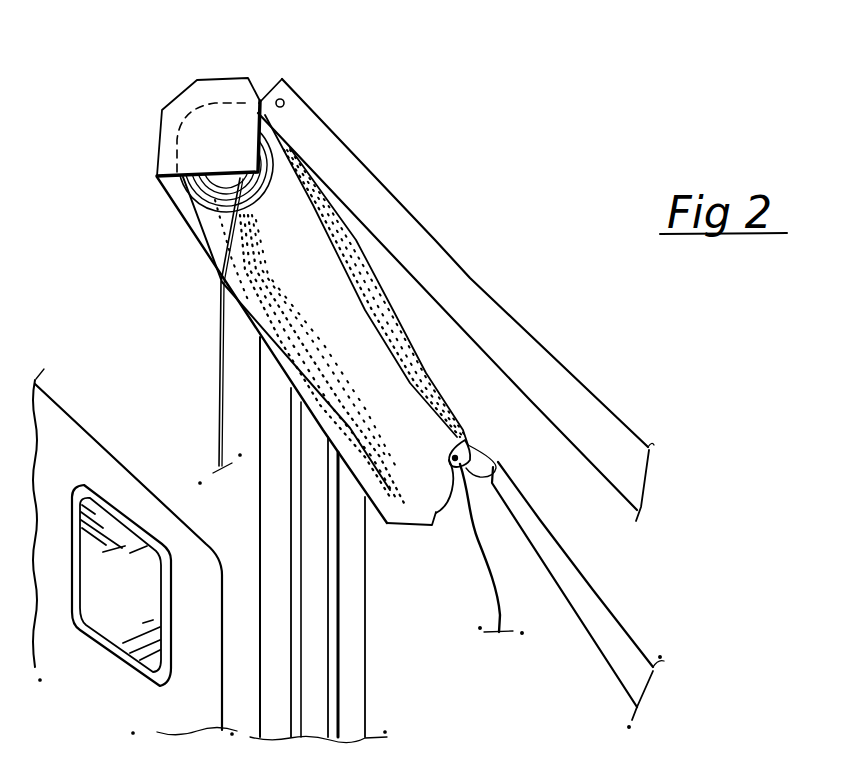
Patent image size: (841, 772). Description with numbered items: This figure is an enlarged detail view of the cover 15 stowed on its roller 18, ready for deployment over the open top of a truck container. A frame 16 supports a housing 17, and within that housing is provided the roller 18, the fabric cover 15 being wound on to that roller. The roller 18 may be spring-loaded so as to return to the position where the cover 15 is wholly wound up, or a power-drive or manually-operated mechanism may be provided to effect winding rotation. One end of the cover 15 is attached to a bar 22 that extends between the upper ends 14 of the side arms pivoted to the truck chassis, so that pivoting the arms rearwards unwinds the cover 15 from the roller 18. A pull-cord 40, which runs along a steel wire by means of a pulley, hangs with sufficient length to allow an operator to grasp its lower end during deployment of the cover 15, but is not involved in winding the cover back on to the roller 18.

The upper ends of the side arms 14 is at (317, 137).
The cover 15 is at (352, 318).
The frame 16 is at (327, 600).
The housing 17 is at (188, 92).
The roller 18 is at (205, 190).
The bar 22 is at (286, 100).
The pull-cord 40 is at (217, 323).